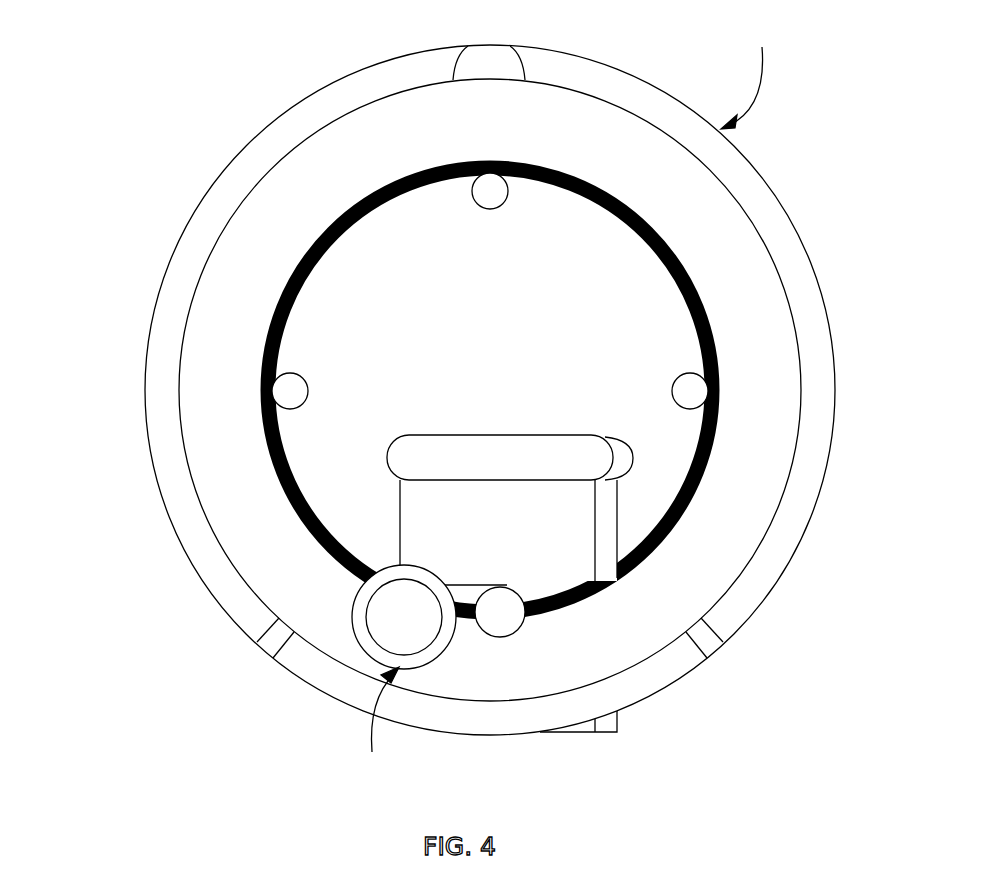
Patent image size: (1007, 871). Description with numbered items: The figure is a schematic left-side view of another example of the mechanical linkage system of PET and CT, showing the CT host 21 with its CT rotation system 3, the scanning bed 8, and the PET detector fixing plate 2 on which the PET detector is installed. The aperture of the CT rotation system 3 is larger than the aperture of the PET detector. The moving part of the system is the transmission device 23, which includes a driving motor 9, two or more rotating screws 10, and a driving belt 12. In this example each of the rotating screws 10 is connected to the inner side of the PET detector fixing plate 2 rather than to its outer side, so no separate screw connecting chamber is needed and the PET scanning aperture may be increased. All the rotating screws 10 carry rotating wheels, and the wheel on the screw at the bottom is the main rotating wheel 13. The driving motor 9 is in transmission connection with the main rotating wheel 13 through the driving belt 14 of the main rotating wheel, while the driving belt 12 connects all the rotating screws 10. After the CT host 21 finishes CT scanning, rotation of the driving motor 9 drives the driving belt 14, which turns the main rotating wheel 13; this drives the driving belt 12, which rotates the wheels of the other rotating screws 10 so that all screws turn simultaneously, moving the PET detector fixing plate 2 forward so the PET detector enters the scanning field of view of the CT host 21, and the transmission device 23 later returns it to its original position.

The PET detector fixing plate 2 is at (230, 270).
The CT rotation system 3 is at (228, 185).
The scanning bed 8 is at (557, 512).
The driving motor 9 is at (393, 618).
The rotating screws 10 is at (290, 393).
The driving belt 12 is at (360, 200).
The main rotating wheel 13 is at (512, 620).
The driving belt of the main rotating wheel 14 is at (470, 643).
The CT host 21 is at (749, 69).
The transmission device 23 is at (378, 733).